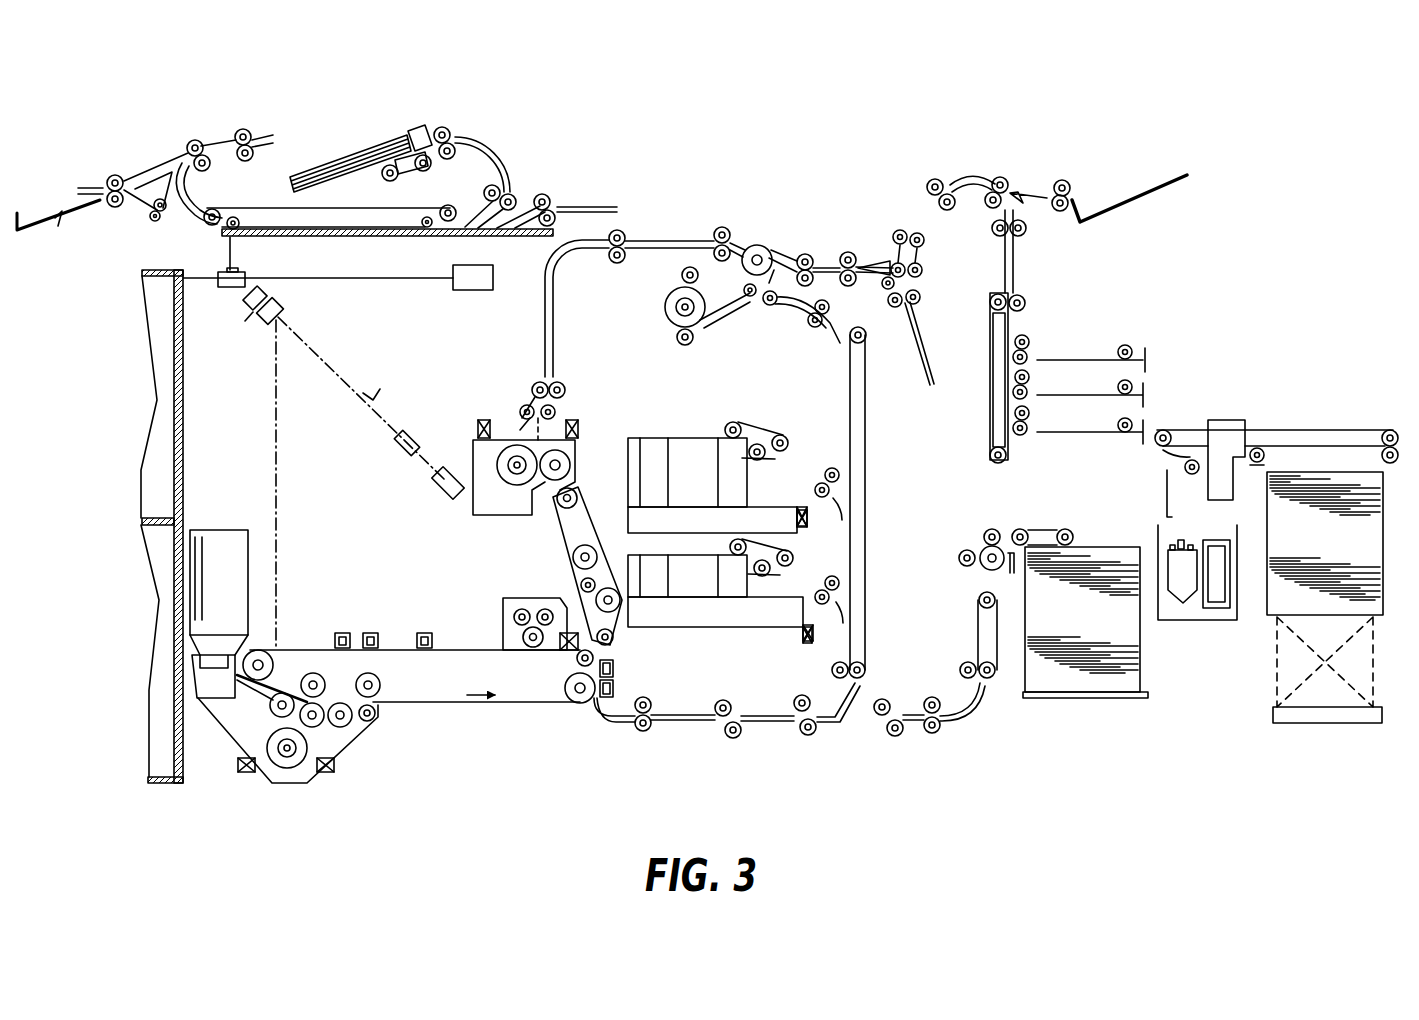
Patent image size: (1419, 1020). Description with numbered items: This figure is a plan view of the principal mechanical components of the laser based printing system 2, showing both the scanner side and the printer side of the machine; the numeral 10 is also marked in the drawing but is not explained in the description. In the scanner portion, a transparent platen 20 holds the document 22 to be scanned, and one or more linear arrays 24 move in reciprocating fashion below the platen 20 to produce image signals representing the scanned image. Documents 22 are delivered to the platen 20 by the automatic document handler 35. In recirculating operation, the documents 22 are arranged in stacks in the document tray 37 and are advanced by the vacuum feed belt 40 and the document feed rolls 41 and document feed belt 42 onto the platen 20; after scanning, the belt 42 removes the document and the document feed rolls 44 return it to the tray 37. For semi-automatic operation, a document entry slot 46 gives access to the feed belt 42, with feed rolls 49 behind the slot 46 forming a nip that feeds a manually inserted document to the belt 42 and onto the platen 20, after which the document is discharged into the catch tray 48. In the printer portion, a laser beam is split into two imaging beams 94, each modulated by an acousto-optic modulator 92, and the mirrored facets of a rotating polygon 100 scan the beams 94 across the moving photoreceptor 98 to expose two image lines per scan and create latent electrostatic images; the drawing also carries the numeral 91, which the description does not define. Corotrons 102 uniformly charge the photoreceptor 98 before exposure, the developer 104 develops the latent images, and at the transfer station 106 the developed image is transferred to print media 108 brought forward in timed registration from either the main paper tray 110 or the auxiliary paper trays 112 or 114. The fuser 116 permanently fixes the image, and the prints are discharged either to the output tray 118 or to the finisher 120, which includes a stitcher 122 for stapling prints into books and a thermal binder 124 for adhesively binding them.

The printing system 2 is at (742, 152).
The input feeder 10 is at (140, 155).
The transparent platen 20 is at (384, 240).
The document 22 is at (333, 180).
The linear array 24 is at (222, 268).
The automatic document handler 35 is at (356, 133).
The document tray 37 is at (334, 182).
The vacuum feed belt 40 is at (432, 166).
The document feed rolls 41 is at (452, 135).
The document feed belt 42 is at (392, 207).
The document feed rolls 44 is at (243, 162).
The document entry slot 46 is at (578, 197).
The catch tray 48 is at (77, 210).
The feed rolls 49 is at (545, 193).
The mirror 91 is at (445, 493).
The acousto-optic modulator 92 is at (412, 435).
The imaging beams 94 is at (384, 387).
The photoreceptor 98 is at (453, 648).
The rotating polygon 100 is at (262, 320).
The corotrons 102 is at (427, 633).
The developer 104 is at (357, 737).
The transfer station 106 is at (584, 724).
The print media 108 is at (1143, 647).
The main paper tray 110 is at (1067, 698).
The auxiliary paper tray 112 is at (680, 627).
The auxiliary paper tray 114 is at (682, 443).
The fuser 116 is at (590, 446).
The output tray 118 is at (1163, 193).
The finisher 120 is at (1200, 357).
The stitcher 122 is at (1142, 370).
The thermal binder 124 is at (1305, 418).